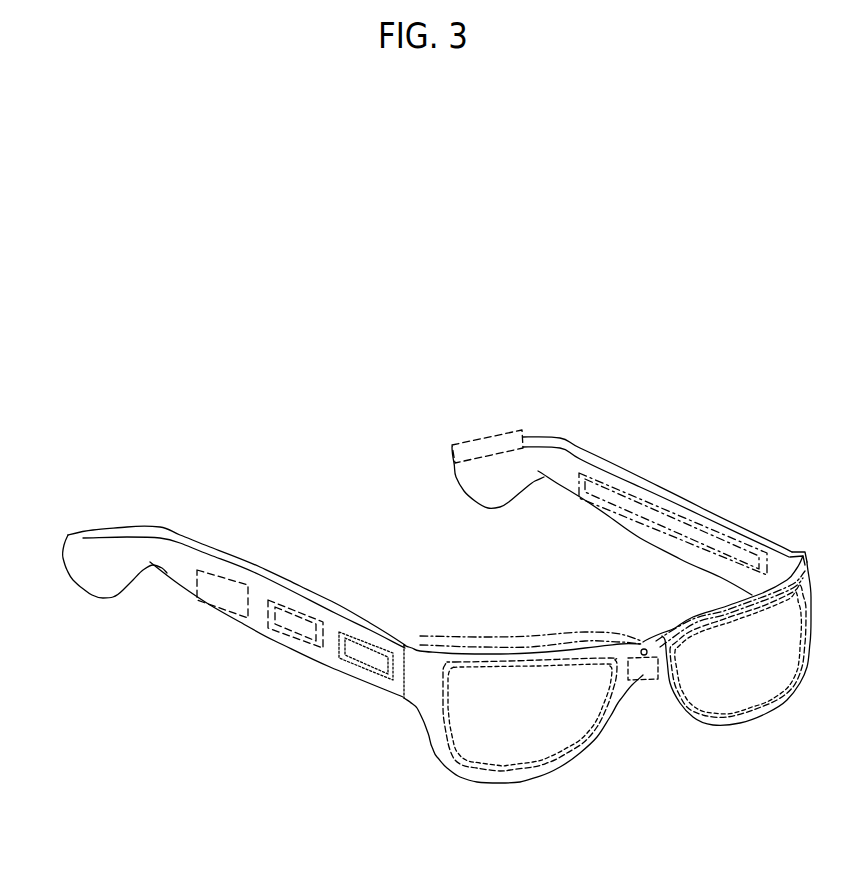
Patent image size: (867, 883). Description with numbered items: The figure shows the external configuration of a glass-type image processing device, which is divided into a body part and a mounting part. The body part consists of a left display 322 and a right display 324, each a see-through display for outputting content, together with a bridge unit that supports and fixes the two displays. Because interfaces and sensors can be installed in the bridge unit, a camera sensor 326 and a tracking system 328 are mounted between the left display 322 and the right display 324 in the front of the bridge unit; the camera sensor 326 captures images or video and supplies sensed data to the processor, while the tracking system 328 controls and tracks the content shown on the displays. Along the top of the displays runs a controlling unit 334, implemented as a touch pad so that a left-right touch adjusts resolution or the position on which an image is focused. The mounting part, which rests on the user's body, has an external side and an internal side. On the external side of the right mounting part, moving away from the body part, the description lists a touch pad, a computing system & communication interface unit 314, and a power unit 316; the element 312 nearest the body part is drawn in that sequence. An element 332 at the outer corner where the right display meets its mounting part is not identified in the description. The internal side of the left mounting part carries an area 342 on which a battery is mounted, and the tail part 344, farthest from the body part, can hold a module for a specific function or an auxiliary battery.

The first module on temple 312 is at (370, 668).
The computing system & communication interface unit 314 is at (290, 638).
The power unit 316 is at (233, 583).
The left display 322 is at (767, 680).
The right display 324 is at (523, 730).
The camera sensor 326 is at (641, 640).
The tracking system 328 is at (652, 682).
The hinge corner 332 is at (806, 550).
The controlling unit 334 is at (488, 643).
The area on which a battery is mounted 342 is at (632, 527).
The tail part 344 is at (488, 428).